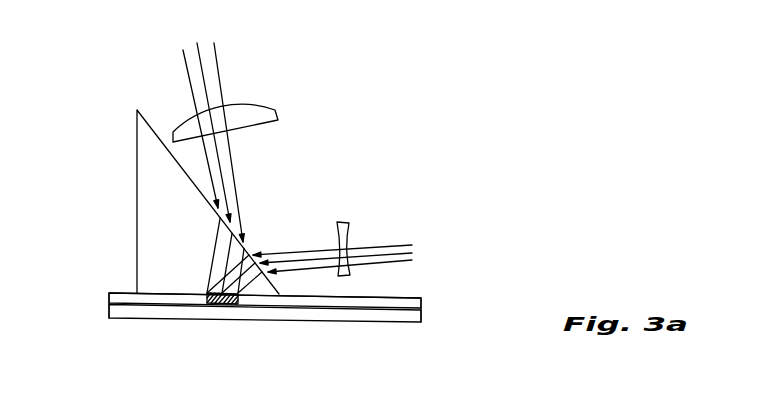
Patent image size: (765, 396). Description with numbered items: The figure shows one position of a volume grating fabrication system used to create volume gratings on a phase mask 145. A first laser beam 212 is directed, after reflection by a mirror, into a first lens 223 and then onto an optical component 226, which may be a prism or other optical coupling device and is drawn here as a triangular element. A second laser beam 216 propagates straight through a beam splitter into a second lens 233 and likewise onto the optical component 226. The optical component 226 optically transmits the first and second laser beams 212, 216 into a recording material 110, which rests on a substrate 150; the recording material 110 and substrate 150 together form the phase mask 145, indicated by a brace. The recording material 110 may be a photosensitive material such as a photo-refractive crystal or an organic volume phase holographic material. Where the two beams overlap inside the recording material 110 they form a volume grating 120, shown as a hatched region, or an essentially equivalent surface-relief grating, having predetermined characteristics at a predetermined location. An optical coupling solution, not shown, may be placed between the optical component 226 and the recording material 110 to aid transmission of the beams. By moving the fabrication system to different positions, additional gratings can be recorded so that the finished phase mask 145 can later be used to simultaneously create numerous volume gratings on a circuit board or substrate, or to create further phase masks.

The first light beam 212 is at (197, 43).
The first lens 223 is at (263, 105).
The optical component 226 is at (137, 178).
The second lens 233 is at (340, 222).
The second laser beam 216 is at (397, 245).
The recording material 110 is at (421, 299).
The substrate 150 is at (421, 318).
The phase mask 145 is at (103, 293).
The volume grating 120 is at (225, 304).